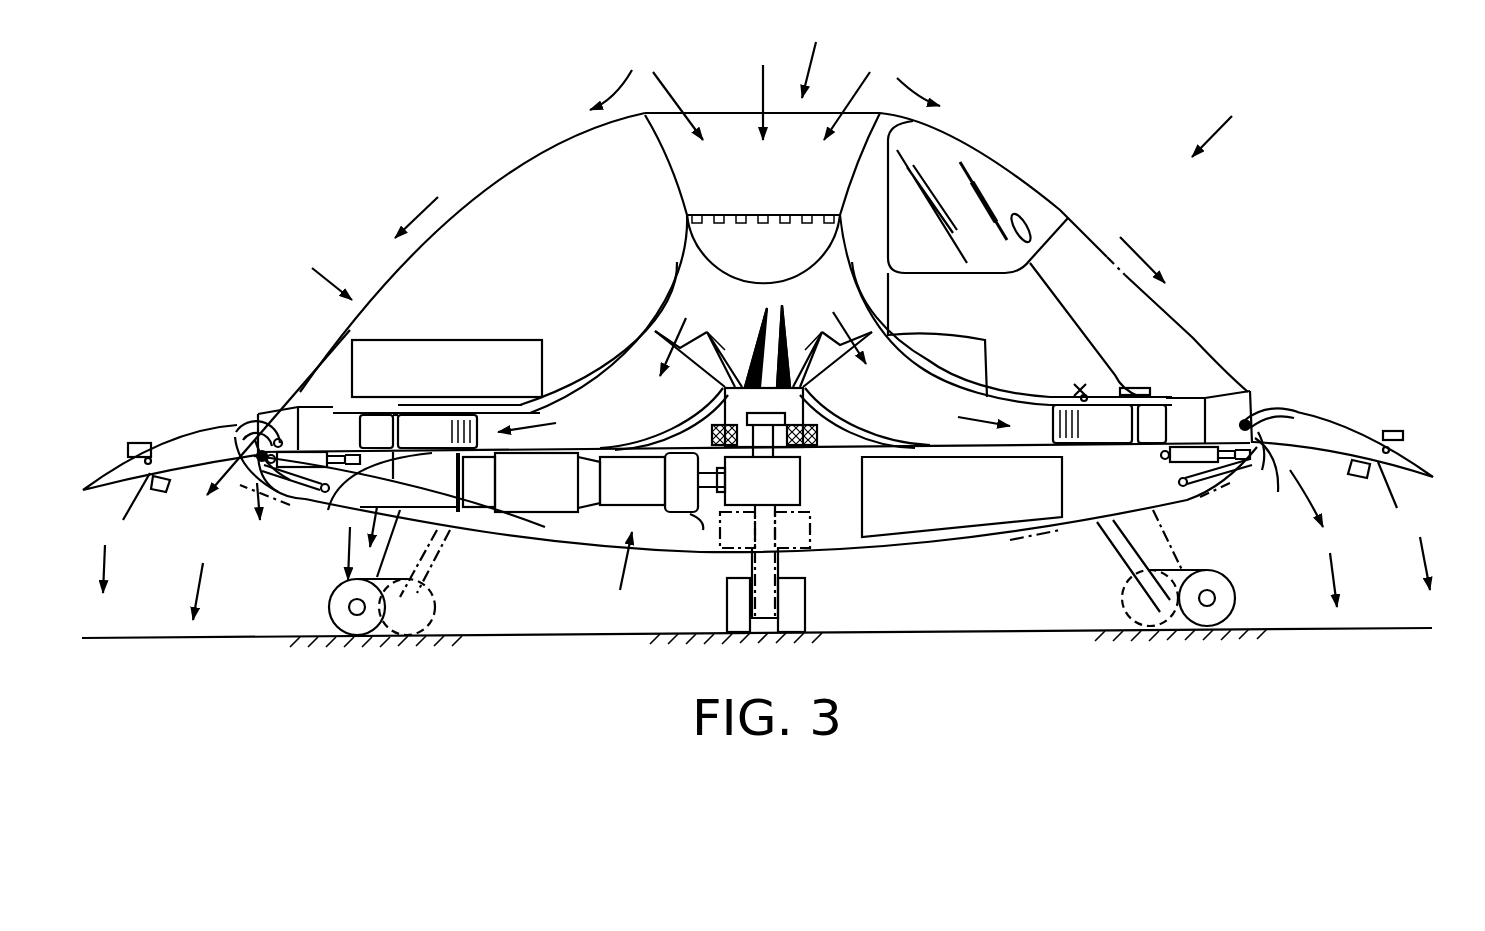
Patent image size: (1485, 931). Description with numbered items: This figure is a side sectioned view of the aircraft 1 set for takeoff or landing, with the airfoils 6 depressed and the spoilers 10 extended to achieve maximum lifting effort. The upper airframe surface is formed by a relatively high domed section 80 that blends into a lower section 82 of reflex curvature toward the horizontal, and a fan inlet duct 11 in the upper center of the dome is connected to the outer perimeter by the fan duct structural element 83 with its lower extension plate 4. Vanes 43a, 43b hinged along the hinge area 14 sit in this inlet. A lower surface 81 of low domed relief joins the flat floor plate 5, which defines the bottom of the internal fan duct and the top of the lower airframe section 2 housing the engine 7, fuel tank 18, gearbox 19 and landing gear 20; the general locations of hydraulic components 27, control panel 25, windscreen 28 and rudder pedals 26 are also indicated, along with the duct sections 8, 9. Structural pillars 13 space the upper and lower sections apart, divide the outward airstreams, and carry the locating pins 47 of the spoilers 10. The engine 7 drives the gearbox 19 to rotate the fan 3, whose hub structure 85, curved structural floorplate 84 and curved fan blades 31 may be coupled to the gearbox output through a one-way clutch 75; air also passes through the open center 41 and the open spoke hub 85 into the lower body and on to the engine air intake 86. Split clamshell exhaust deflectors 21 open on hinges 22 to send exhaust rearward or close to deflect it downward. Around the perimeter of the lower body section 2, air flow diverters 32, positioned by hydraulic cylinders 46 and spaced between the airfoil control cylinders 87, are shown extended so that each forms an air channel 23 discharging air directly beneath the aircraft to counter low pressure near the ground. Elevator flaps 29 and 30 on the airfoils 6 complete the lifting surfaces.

The aircraft 1 is at (1220, 125).
The lower airframe section 2 is at (757, 532).
The fan 3 is at (780, 318).
The lower extension plate 4 is at (390, 413).
The floor plate 5 is at (380, 481).
The airfoil 6 is at (181, 437).
The engine 7 is at (532, 496).
The duct section 8 is at (368, 446).
The duct section 9 is at (1092, 438).
The spoiler 10 is at (236, 426).
The fan inlet duct 11 is at (877, 145).
The structural pillar 13 is at (300, 405).
The hinge area 14 is at (760, 208).
The fuel tank 18 is at (953, 504).
The gearbox 19 is at (728, 500).
The landing gear 20 is at (325, 604).
The exhaust deflector 21 is at (455, 500).
The hinge 22 is at (414, 498).
The air channel 23 is at (756, 491).
The control panel 25 is at (1050, 235).
The rudder pedals 26 is at (1080, 388).
The hydraulic components 27 is at (438, 381).
The windscreen 28 is at (990, 168).
The elevator flap 29 is at (140, 508).
The elevator flap 30 is at (121, 472).
The fan blade 31 is at (577, 433).
The air flow diverter 32 is at (240, 462).
The open center 41 is at (796, 403).
The vane 43a is at (706, 215).
The vane 43b is at (710, 248).
The hydraulic cylinder 46 is at (1205, 490).
The locating pin 47 is at (262, 426).
The one-way clutch 75 is at (722, 400).
The domed section 80 is at (508, 175).
The lower surface 81 is at (548, 542).
The lower section 82 is at (313, 269).
The fan duct structural element 83 is at (614, 360).
The structural floorplate 84 is at (668, 428).
The hub structure 85 is at (826, 437).
The air intake 86 is at (703, 520).
The airfoil control cylinder 87 is at (336, 490).